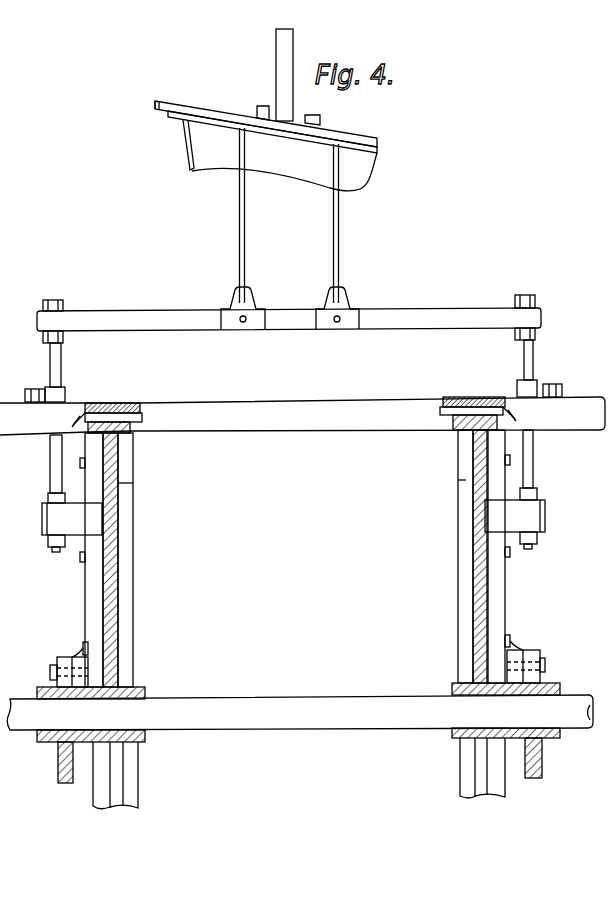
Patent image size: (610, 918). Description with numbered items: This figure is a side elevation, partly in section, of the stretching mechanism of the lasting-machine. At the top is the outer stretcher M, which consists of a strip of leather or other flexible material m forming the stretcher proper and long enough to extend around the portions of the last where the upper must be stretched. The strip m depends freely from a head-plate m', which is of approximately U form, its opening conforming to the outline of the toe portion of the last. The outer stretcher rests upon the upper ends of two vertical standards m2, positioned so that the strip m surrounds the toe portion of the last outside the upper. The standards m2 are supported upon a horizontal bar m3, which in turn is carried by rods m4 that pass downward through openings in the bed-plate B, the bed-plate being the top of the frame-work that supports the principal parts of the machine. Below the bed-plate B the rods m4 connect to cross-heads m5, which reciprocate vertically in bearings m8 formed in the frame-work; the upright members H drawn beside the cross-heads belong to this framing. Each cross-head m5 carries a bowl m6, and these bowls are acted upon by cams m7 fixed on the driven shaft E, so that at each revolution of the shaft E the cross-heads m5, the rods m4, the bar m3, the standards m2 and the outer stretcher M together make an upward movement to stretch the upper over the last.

The head-plate m' is at (266, 120).
The outer stretcher M is at (318, 83).
The strip of leather m is at (272, 151).
The vertical standards m2 is at (248, 219).
The horizontal bars m3 is at (289, 309).
The rods m4 is at (65, 360).
The cross-heads m5 is at (293, 520).
The bowls m6 is at (62, 657).
The cams m7 is at (57, 755).
The bearings m8 is at (86, 580).
The bed-plate B is at (302, 416).
The standards H is at (140, 614).
The driven shaft E is at (300, 712).